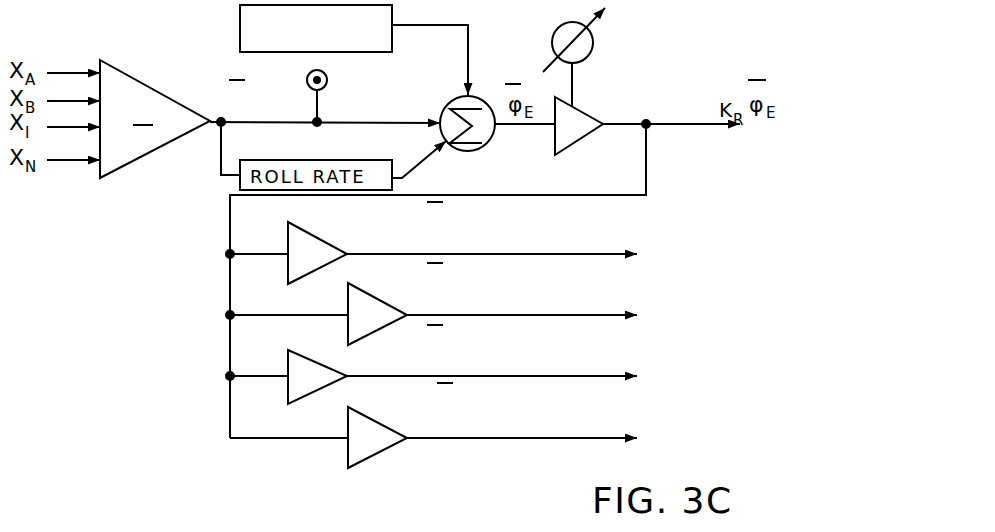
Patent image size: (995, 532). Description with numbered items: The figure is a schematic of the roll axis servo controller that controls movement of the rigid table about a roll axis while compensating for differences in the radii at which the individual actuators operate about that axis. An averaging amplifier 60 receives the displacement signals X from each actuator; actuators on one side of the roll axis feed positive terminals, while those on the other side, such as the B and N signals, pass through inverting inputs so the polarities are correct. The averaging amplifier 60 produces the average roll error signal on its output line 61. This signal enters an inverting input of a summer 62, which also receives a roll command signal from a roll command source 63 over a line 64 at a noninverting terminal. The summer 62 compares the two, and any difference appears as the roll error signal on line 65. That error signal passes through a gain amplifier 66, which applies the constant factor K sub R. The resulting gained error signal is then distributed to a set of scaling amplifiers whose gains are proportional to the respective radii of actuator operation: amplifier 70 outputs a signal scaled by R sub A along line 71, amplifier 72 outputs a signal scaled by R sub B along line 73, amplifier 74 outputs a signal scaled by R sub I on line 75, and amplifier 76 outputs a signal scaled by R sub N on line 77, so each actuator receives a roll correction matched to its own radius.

The averaging amplifier 60 is at (186, 131).
The output line 61 is at (280, 124).
The summer 62 is at (491, 143).
The roll command source 63 is at (240, 25).
The line 64 is at (468, 25).
The line 65 is at (555, 124).
The gain amplifier 66 is at (584, 111).
The amplifier 70 is at (313, 235).
The line 71 is at (592, 254).
The amplifier 72 is at (386, 283).
The line 73 is at (607, 315).
The amplifier 74 is at (328, 367).
The line 75 is at (612, 376).
The amplifier 76 is at (381, 424).
The line 77 is at (614, 438).